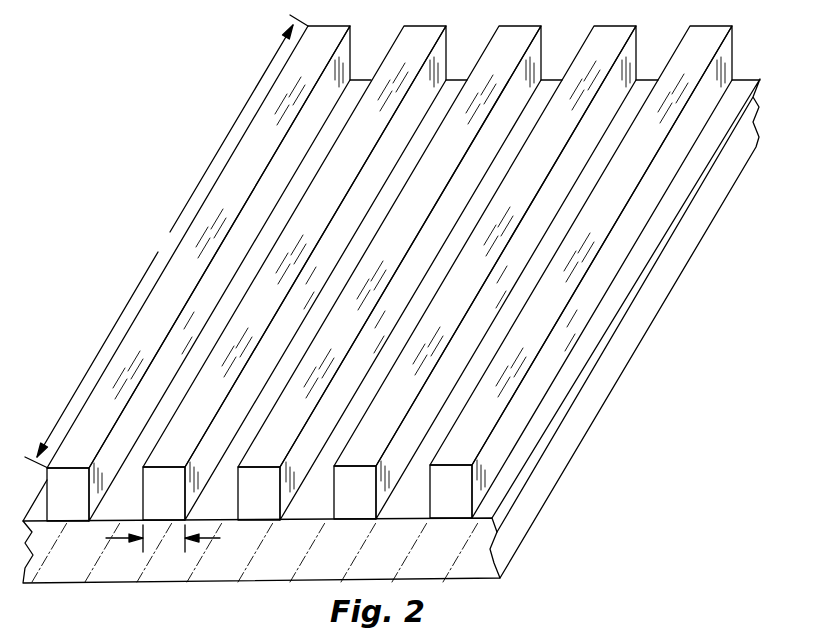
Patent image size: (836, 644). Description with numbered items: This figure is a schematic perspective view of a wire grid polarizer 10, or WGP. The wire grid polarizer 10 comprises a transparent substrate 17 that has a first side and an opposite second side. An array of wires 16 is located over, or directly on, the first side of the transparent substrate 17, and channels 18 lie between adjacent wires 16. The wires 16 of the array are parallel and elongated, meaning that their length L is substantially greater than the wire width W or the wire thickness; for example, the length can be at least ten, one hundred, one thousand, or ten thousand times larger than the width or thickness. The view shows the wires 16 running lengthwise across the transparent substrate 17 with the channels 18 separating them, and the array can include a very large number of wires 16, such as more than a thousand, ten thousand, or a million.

The wire grid polarizer 10 is at (389, 299).
The wires 16 is at (378, 268).
The transparent substrate 17 is at (268, 561).
The channels 18 is at (555, 59).